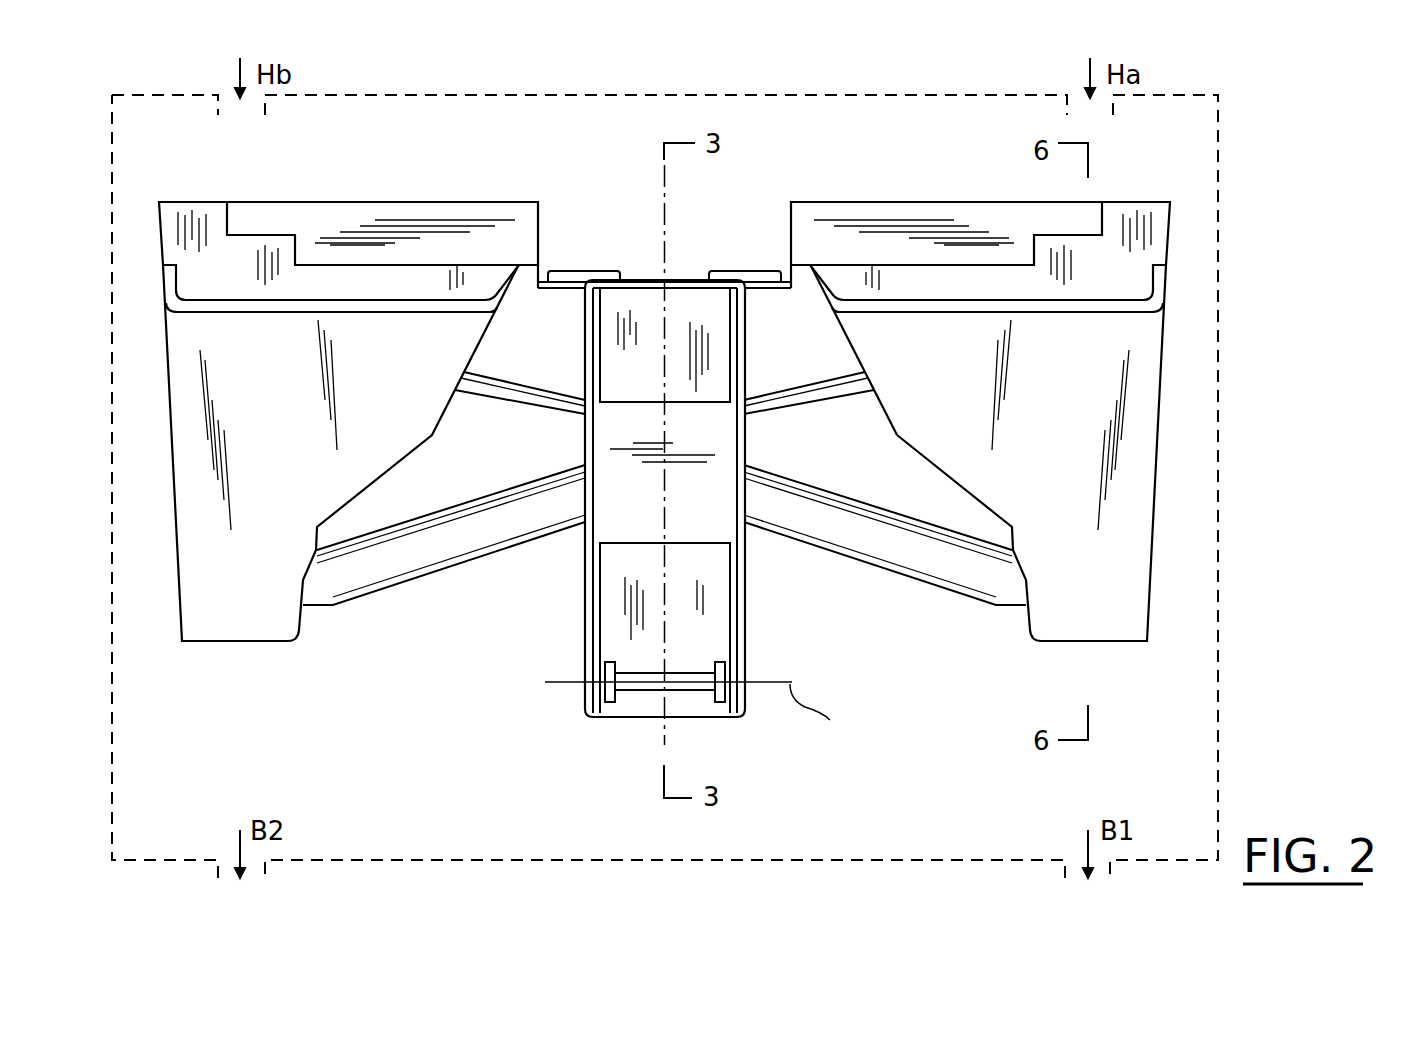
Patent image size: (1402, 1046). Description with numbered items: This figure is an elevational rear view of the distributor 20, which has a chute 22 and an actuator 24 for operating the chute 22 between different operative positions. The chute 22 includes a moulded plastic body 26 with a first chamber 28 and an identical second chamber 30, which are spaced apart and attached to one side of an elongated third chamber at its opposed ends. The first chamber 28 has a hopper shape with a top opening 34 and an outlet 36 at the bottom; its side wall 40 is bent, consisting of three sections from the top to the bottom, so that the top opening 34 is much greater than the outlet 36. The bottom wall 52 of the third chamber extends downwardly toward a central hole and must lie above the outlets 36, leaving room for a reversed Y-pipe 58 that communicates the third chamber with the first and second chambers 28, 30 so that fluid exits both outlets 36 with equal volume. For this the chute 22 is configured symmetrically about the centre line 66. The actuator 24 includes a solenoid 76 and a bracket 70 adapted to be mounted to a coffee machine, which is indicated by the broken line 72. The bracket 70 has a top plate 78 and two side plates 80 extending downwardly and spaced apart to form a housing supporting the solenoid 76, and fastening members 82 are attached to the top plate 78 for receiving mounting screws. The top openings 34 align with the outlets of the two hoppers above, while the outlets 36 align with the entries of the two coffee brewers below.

The distributor 20 is at (710, 444).
The chute 22 is at (853, 201).
The actuator 24 is at (666, 533).
The body 26 is at (1005, 201).
The first chamber 28 is at (1160, 400).
The second chamber 30 is at (163, 283).
The top opening 34 is at (1132, 283).
The outlet 36 is at (227, 641).
The side wall 40 is at (922, 460).
The bottom wall 52 is at (810, 393).
The reversed Y-pipe 58 is at (912, 581).
The centre line 66 is at (667, 732).
The bracket 70 is at (584, 645).
The broken line 72 is at (1225, 197).
The solenoid 76 is at (612, 524).
The top plate 78 is at (645, 280).
The side plates 80 is at (583, 357).
The fastening members 82 is at (580, 270).